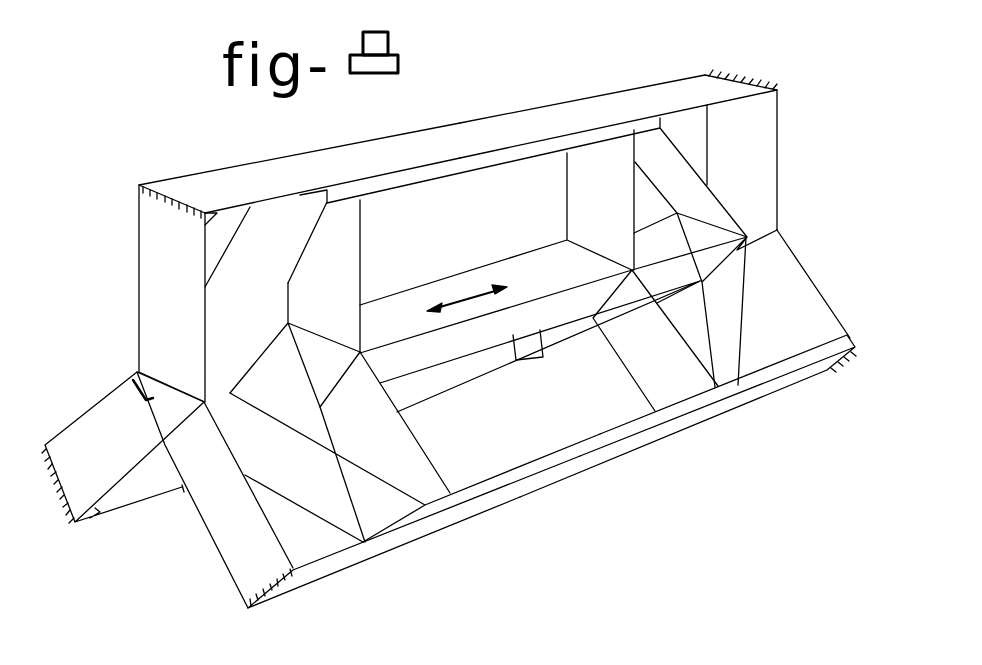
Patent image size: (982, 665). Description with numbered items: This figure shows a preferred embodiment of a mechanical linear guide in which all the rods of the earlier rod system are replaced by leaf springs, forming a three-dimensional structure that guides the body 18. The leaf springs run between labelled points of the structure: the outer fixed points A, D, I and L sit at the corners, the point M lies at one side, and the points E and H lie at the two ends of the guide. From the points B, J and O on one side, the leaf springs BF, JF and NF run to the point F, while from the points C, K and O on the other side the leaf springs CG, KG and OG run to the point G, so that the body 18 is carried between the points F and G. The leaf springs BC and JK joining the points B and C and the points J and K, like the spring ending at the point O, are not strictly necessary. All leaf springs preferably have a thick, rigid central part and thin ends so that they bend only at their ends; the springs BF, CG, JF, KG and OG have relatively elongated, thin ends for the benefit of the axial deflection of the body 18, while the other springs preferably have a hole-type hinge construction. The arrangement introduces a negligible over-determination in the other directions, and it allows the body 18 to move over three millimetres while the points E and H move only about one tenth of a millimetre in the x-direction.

The point A is at (163, 182).
The point B is at (317, 182).
The point C is at (612, 127).
The point D is at (731, 78).
The point E is at (133, 372).
The point F is at (353, 376).
The point G is at (567, 240).
The point H is at (777, 230).
The point I is at (251, 612).
The point J is at (427, 507).
The point K is at (735, 385).
The point L is at (830, 363).
The point M is at (72, 518).
The point O is at (538, 359).
The body 18 is at (420, 292).